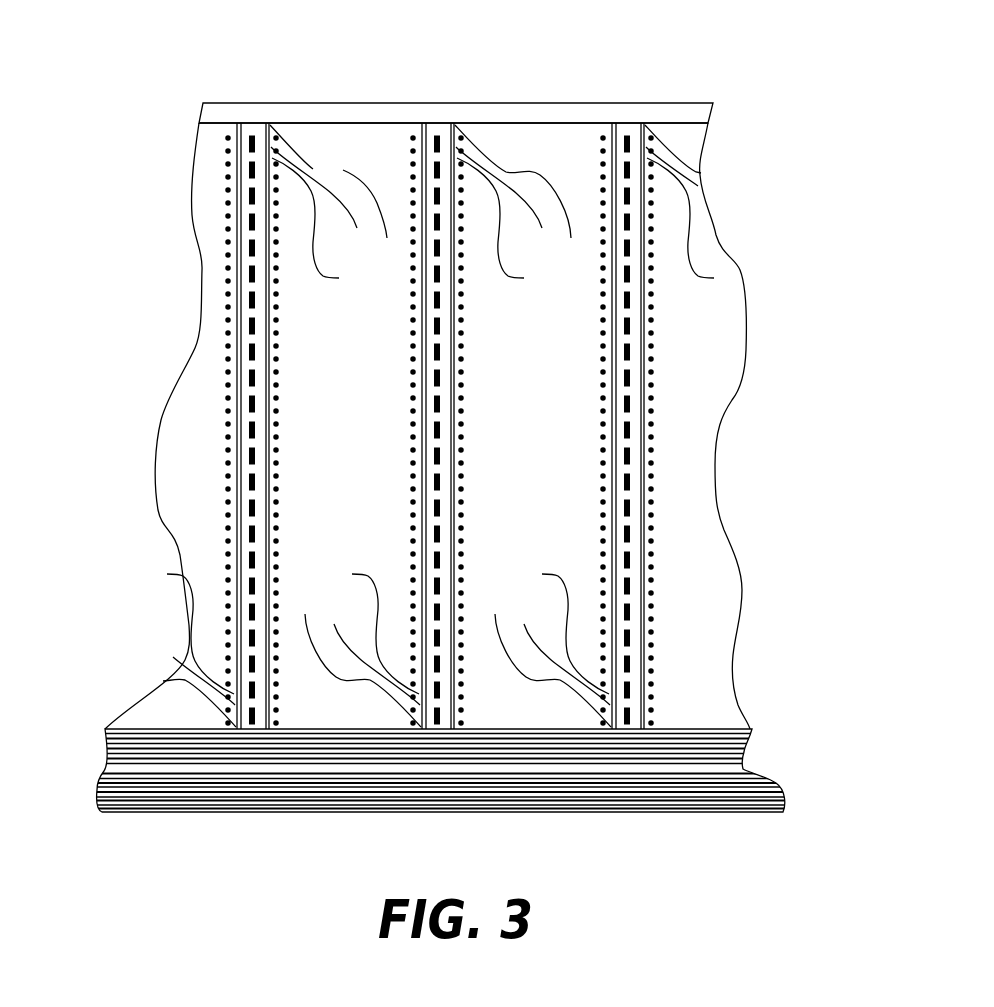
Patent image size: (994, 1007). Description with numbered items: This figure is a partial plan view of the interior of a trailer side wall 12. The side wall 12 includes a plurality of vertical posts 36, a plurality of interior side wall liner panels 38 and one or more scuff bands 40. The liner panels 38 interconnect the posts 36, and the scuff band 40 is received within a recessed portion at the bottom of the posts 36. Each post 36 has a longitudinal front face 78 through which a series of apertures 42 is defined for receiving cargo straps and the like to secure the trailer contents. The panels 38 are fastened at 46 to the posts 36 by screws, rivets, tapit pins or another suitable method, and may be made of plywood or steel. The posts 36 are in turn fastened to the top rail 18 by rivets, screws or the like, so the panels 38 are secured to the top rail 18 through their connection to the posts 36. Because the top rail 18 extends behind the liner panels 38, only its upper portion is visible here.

The side wall 12 is at (186, 223).
The top rail 18 is at (660, 103).
The vertical posts 36 is at (440, 123).
The interior side wall liner panels 38 is at (362, 123).
The scuff band 40 is at (695, 732).
The apertures 42 is at (630, 275).
The fastening locations 46 is at (328, 201).
The longitudinal front face 78 is at (632, 340).